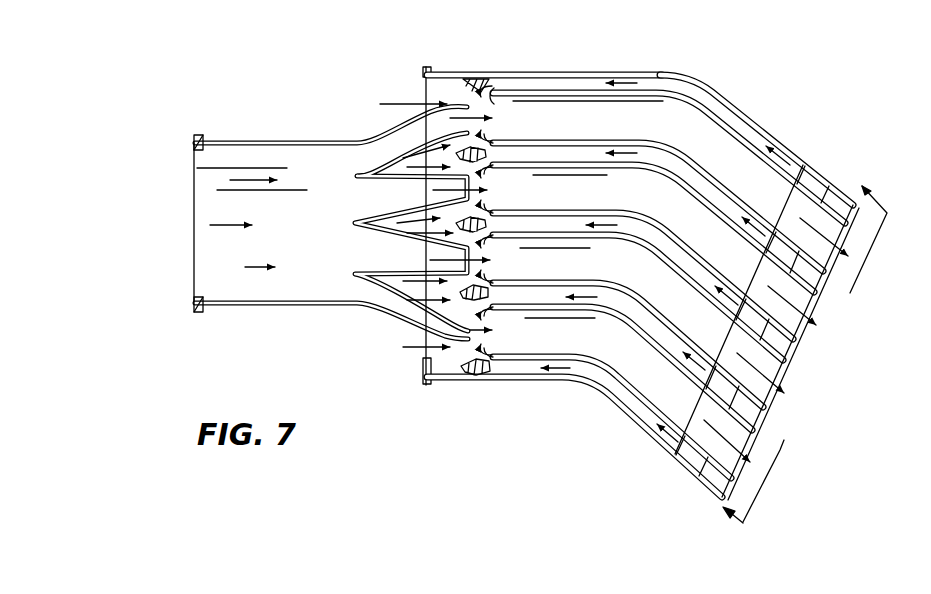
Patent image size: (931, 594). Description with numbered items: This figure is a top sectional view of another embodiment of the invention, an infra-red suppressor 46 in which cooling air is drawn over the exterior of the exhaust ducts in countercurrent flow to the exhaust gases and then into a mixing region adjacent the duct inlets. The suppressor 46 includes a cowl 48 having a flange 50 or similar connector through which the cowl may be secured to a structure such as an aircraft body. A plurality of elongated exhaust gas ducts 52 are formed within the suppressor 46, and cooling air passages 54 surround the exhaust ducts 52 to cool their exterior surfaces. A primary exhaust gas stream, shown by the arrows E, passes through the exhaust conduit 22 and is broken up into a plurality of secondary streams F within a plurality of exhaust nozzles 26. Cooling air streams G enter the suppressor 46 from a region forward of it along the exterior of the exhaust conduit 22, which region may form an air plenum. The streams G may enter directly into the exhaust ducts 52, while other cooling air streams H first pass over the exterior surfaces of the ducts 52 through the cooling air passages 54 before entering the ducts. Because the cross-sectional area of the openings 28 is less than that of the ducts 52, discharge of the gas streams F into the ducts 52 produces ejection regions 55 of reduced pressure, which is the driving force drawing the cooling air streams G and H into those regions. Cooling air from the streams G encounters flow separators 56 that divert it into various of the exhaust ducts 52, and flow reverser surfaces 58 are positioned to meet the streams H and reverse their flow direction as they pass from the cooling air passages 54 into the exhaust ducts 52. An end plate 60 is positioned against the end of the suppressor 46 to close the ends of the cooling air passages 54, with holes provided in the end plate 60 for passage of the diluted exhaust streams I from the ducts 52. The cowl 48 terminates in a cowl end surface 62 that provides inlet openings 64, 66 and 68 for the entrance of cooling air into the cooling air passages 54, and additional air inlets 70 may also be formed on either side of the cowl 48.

The exhaust conduit 22 is at (322, 123).
The exhaust nozzles 26 is at (352, 305).
The openings 28 is at (431, 385).
The infra-red suppressor 46 is at (650, 70).
The cowl 48 is at (720, 83).
The flange 50 is at (431, 68).
The exhaust gas ducts 52 is at (531, 120).
The cooling air passages 54 is at (750, 122).
The ejection regions 55 is at (510, 330).
The flow separators 56 is at (453, 292).
The flow reverser surfaces 58 is at (480, 210).
The end plate 60 is at (797, 337).
The cowl end surface 62 is at (797, 193).
The inlet opening 64 is at (733, 380).
The inlet opening 66 is at (733, 397).
The inlet opening 68 is at (752, 440).
The air inlets 70 is at (827, 364).
The primary exhaust gas stream E is at (247, 266).
The secondary streams F is at (457, 124).
The cooling air streams G is at (424, 237).
The cooling air streams H is at (628, 85).
The diluted exhaust streams I is at (793, 297).